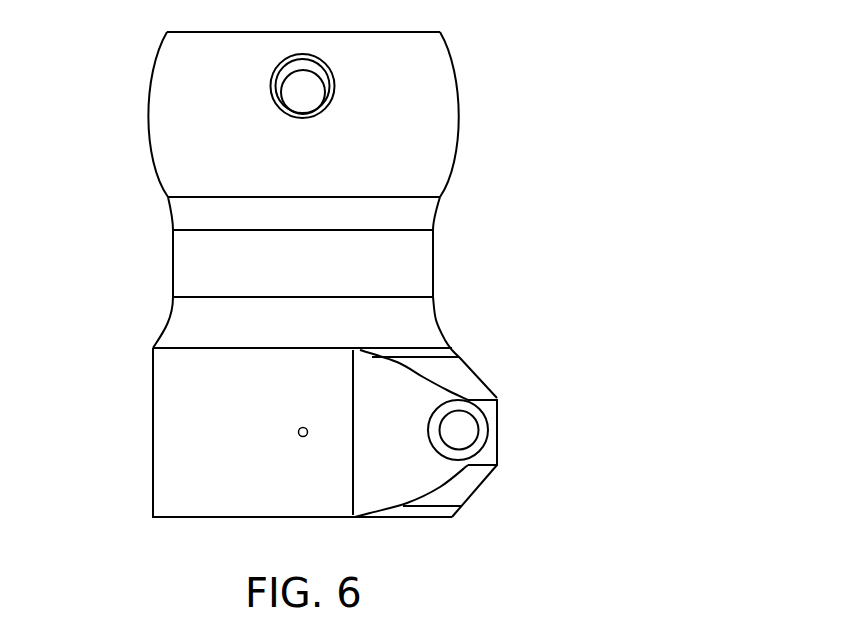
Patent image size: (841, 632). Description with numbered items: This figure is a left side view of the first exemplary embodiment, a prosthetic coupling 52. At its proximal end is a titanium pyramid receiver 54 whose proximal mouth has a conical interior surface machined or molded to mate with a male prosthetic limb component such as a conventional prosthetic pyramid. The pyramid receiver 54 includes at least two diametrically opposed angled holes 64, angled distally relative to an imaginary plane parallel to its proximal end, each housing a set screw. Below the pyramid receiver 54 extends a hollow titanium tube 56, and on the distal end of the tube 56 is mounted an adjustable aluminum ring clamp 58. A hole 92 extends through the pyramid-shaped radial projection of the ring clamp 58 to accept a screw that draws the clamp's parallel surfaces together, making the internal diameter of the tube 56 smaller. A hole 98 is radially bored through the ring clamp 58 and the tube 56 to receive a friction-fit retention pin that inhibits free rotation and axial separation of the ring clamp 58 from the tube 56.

The prosthetic coupling 52 is at (100, 247).
The pyramid receiver 54 is at (361, 114).
The tube 56 is at (431, 325).
The ring clamp 58 is at (317, 432).
The angled hole 64 is at (303, 105).
The hole 92 is at (465, 433).
The hole 98 is at (298, 432).